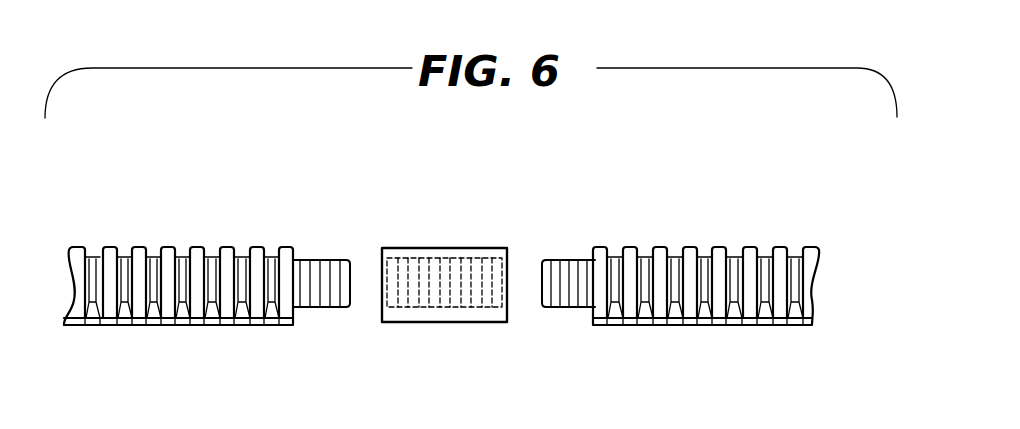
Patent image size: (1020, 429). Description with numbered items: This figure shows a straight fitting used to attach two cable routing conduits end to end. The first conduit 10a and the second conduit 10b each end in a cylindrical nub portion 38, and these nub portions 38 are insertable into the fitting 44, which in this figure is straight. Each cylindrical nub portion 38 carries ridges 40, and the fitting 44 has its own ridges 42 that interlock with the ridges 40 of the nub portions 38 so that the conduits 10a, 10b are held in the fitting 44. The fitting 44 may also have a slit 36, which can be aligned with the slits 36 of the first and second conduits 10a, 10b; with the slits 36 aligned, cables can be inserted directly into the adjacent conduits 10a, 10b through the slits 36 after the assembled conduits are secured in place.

The first conduit 10a is at (188, 190).
The second conduit 10b is at (760, 200).
The slit 36 is at (225, 249).
The cylindrical nub portion 38 is at (355, 218).
The ridges 40 is at (325, 308).
The ridges of fitting 42 is at (381, 283).
The fitting 44 is at (457, 203).